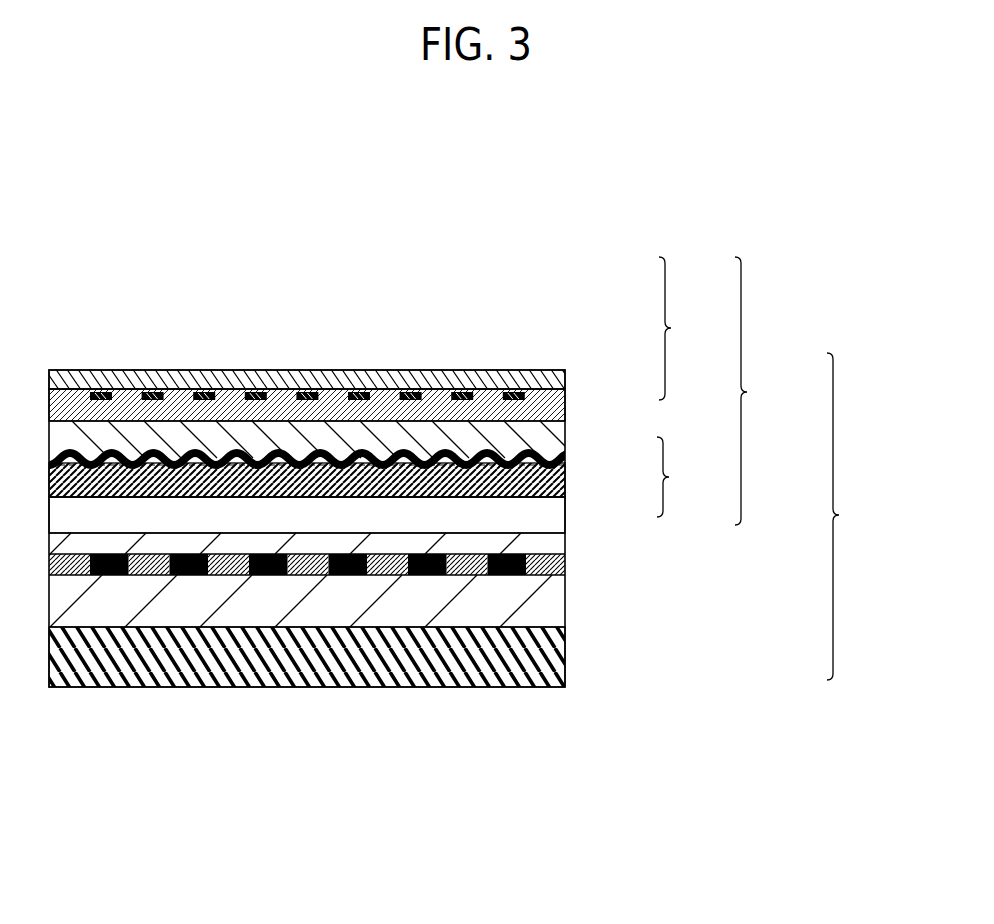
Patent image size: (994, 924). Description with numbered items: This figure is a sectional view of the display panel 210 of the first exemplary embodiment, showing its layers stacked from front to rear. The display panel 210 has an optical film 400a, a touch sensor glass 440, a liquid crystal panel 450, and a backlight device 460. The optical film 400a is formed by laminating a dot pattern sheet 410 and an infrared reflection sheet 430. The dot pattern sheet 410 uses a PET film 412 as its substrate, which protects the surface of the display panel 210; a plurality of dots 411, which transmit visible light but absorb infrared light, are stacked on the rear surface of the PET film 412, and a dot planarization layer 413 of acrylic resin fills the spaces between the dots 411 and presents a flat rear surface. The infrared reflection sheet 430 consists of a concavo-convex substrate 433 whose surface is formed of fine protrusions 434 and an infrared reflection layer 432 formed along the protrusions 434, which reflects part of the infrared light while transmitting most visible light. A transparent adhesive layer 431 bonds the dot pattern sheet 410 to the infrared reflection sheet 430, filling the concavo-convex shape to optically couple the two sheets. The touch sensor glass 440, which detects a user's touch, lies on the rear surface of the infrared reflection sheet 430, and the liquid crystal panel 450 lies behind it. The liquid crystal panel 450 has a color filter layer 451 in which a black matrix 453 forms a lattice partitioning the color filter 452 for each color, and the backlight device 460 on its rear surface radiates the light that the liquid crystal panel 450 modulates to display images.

The display panel 210 is at (865, 516).
The optical film 400a is at (779, 391).
The dot pattern sheet 410 is at (693, 328).
The dots 411 is at (360, 390).
The PET film 412 is at (565, 378).
The dot planarization layer 413 is at (565, 397).
The infrared reflection sheet 430 is at (692, 477).
The transparent adhesive layer 431 is at (530, 438).
The infrared reflection layer 432 is at (353, 388).
The concavo-convex substrate 433 is at (553, 483).
The protrusions 434 is at (210, 455).
The touch sensor glass 440 is at (553, 520).
The liquid crystal panel 450 is at (382, 644).
The color filter layer 451 is at (346, 652).
The color filter 452 is at (397, 577).
The black matrix 453 is at (517, 575).
The backlight device 460 is at (572, 628).